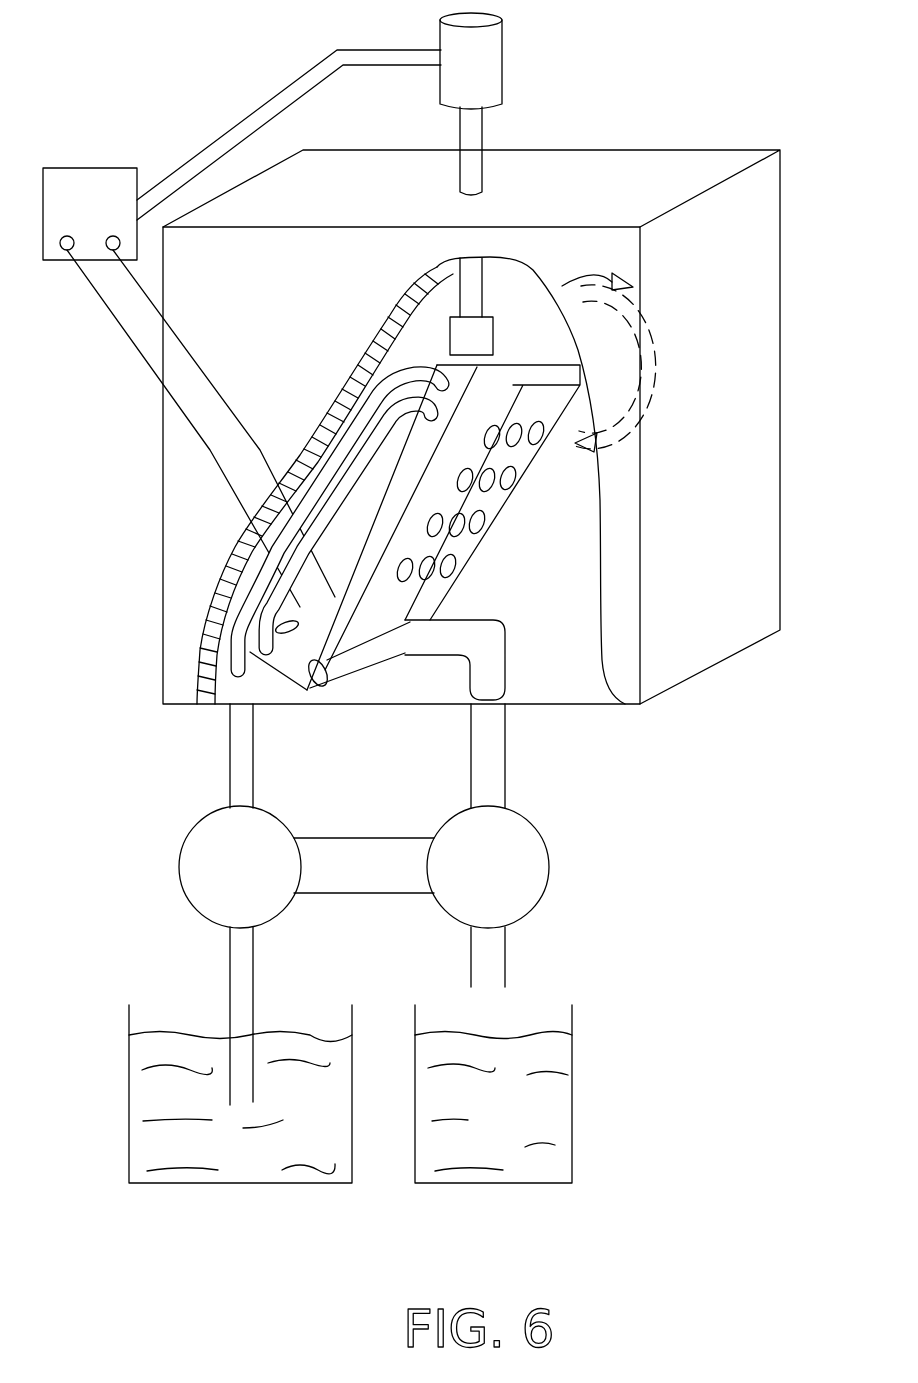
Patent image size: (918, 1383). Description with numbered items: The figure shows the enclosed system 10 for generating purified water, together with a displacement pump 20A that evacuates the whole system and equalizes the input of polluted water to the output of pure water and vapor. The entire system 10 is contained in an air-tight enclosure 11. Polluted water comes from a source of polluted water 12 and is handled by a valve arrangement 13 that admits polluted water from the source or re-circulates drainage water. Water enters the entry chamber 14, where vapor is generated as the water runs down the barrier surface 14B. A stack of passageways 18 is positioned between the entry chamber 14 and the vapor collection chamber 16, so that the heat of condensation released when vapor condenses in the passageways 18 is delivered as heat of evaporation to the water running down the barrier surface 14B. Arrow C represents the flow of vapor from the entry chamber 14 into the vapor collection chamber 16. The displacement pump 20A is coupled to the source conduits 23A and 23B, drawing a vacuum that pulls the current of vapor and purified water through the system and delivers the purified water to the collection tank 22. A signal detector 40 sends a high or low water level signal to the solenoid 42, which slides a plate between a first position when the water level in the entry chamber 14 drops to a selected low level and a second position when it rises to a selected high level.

The enclosed system 10 is at (512, 300).
The air-tight enclosure 11 is at (731, 428).
The source of polluted water 12 is at (337, 1123).
The valve arrangement 13 is at (350, 470).
The entry chamber 14 is at (380, 503).
The barrier surface 14B is at (417, 453).
The vapor collection chamber 16 is at (570, 613).
The passageways 18 is at (480, 466).
The displacement pump 20A is at (393, 883).
The collection tank 22 is at (523, 1123).
The source conduit 23A is at (230, 758).
The source conduit 23B is at (471, 757).
The signal detector 40 is at (111, 224).
The solenoid 42 is at (485, 62).
The arrow C is at (609, 348).